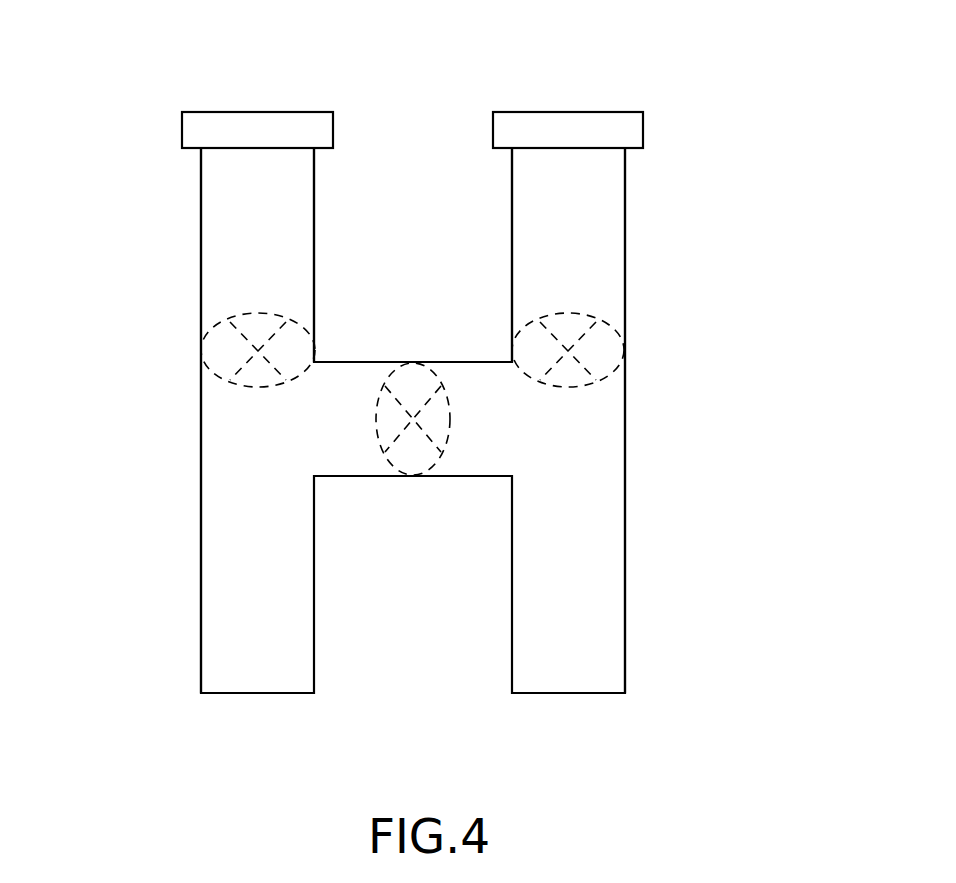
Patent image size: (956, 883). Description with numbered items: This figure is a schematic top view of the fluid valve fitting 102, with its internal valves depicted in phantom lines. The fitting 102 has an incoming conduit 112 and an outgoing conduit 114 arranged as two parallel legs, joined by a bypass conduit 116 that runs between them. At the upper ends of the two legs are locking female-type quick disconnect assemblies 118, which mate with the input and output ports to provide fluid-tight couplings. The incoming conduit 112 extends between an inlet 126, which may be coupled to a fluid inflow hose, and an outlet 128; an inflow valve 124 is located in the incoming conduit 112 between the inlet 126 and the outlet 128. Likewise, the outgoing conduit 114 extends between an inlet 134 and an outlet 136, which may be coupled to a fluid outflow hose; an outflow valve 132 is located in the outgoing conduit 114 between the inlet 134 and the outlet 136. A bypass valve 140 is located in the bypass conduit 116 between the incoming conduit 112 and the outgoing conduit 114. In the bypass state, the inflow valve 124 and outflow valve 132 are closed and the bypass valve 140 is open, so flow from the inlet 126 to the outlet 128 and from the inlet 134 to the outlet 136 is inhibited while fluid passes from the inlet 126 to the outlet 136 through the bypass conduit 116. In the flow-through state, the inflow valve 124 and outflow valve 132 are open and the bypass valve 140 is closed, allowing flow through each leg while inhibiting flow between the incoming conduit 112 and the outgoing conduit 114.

The fluid valve fitting 102 is at (198, 104).
The incoming conduit 112 is at (213, 237).
The outgoing conduit 114 is at (607, 233).
The bypass conduit 116 is at (465, 460).
The locking female-type quick disconnect assembly 118 is at (188, 128).
The inflow valve 124 is at (243, 383).
The inlet of the incoming conduit 126 is at (258, 662).
The outlet of the incoming conduit 128 is at (266, 150).
The outflow valve 132 is at (570, 385).
The inlet of the outgoing conduit 134 is at (576, 163).
The outlet of the outgoing conduit 136 is at (573, 692).
The bypass valve 140 is at (442, 395).